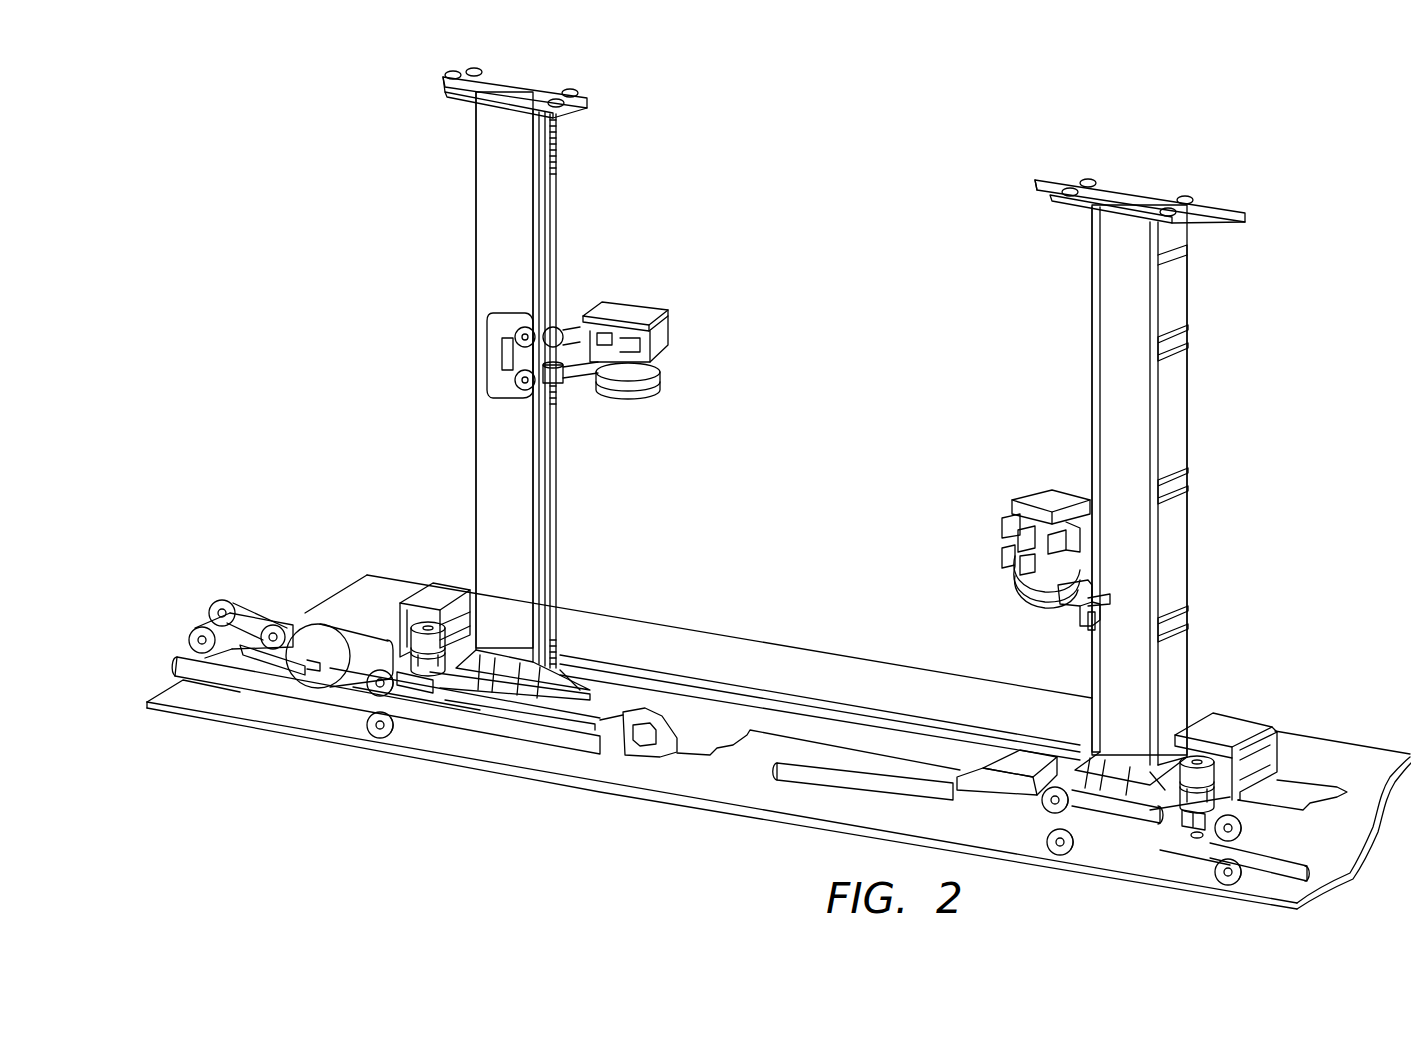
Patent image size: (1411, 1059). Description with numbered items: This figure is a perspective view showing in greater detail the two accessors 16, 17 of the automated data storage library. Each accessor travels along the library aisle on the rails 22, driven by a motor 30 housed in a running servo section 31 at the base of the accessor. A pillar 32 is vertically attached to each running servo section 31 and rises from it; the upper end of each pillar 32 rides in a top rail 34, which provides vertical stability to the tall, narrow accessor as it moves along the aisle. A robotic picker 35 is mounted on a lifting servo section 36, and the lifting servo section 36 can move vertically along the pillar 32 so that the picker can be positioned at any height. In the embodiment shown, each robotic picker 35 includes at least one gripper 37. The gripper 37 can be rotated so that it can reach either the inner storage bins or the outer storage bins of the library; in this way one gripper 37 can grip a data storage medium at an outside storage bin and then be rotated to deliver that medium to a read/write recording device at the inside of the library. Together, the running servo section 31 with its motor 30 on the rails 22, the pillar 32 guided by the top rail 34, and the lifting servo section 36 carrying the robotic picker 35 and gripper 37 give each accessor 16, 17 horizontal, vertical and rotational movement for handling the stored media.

The accessor 16 is at (433, 270).
The accessor 17 is at (1228, 368).
The rails 22 is at (750, 731).
The motor 30 is at (428, 672).
The running servo section 31 is at (456, 586).
The pillar 32 is at (480, 462).
The top rail 34 is at (510, 86).
The robotic picker 35 is at (626, 300).
The lifting servo section 36 is at (577, 380).
The gripper 37 is at (652, 360).